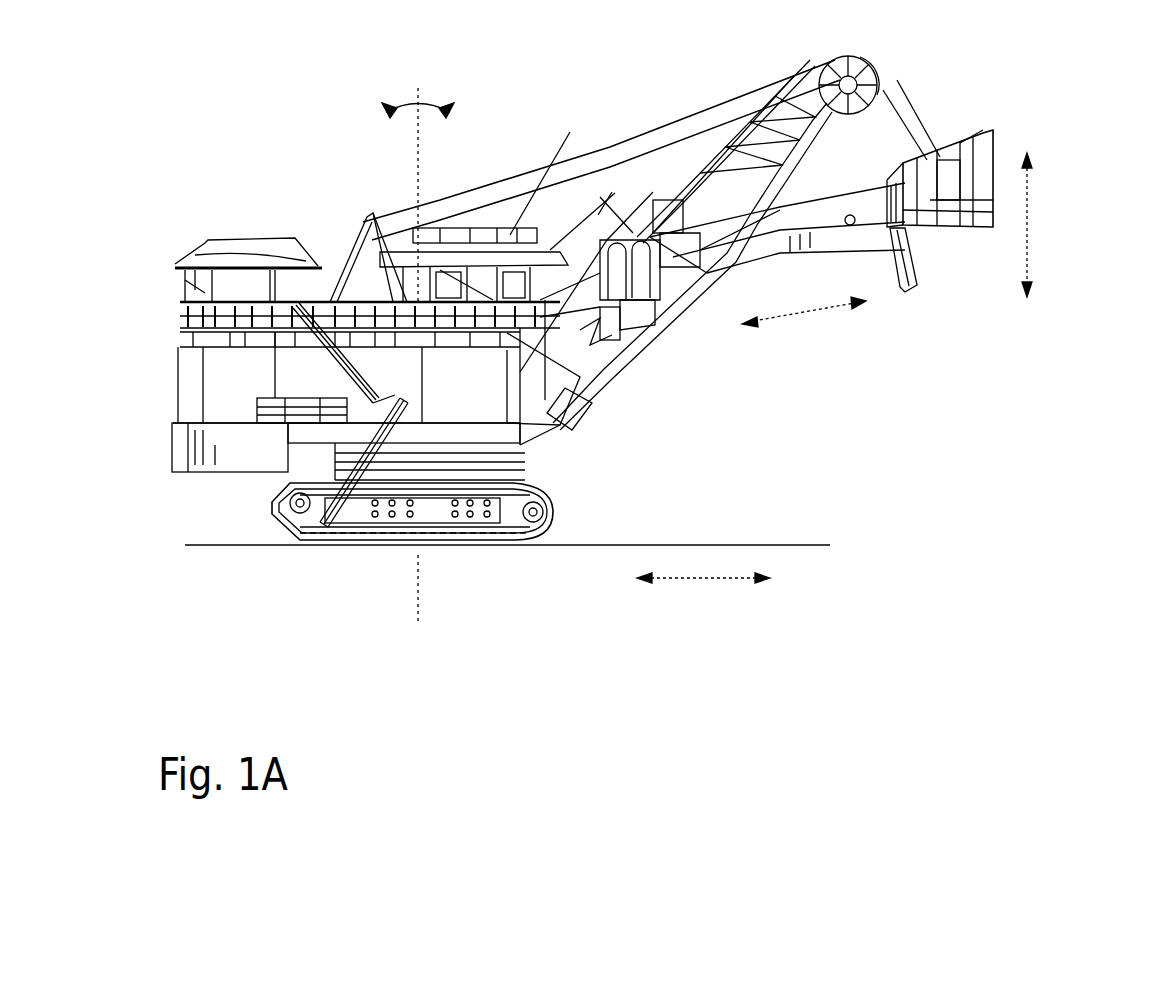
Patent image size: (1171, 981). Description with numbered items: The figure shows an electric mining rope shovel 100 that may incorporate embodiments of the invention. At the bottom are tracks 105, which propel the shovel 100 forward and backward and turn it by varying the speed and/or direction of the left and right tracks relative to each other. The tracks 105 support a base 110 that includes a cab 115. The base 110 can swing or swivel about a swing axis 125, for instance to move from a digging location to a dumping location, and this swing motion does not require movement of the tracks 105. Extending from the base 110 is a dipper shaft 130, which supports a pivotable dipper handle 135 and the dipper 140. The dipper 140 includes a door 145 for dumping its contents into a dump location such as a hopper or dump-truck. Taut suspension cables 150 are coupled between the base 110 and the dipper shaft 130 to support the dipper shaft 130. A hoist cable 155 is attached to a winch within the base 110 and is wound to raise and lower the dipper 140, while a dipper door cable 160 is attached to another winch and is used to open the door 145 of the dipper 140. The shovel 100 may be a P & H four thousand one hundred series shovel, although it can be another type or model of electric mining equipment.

The electric mining rope shovel 100 is at (217, 134).
The tracks 105 is at (560, 508).
The base 110 is at (251, 360).
The cab 115 is at (568, 136).
The swing axis 125 is at (412, 576).
The dipper shaft 130 is at (810, 130).
The dipper handle 135 is at (792, 205).
The dipper 140 is at (950, 143).
The door 145 is at (913, 257).
The suspension cables 150 is at (505, 186).
The hoist cable 155 is at (790, 80).
The dipper door cable 160 is at (740, 272).